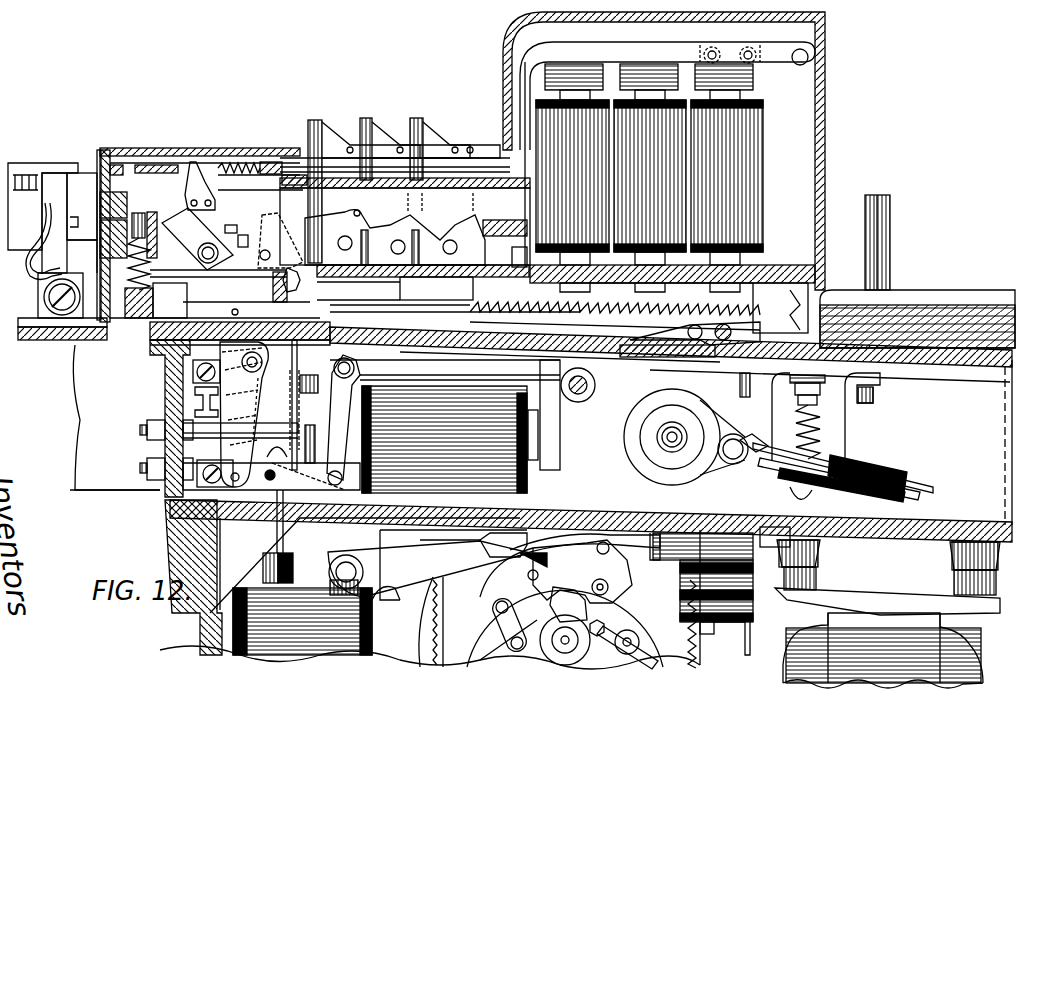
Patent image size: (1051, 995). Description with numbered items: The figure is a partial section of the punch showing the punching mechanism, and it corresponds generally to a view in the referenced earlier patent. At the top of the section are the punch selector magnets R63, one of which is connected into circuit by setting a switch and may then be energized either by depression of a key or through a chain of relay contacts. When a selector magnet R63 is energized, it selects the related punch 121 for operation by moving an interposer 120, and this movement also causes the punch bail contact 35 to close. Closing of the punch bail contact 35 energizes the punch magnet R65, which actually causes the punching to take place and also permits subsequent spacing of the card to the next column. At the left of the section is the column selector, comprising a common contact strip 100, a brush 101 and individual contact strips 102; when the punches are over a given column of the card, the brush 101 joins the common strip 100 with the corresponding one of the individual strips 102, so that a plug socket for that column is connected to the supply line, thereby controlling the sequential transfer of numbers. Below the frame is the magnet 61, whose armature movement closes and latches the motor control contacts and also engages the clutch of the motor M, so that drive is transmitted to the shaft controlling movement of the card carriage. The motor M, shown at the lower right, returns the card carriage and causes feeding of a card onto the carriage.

The individual contact strips 102 is at (32, 173).
The brush 101 is at (83, 210).
The common contact strip 100 is at (27, 240).
The punch 121 is at (140, 322).
The punch bail contact 35 is at (293, 396).
The interposer 120 is at (416, 249).
The punch selector magnet R63 is at (745, 141).
The punch magnet R65 is at (500, 478).
The magnet 61 is at (265, 612).
The motor M is at (975, 655).